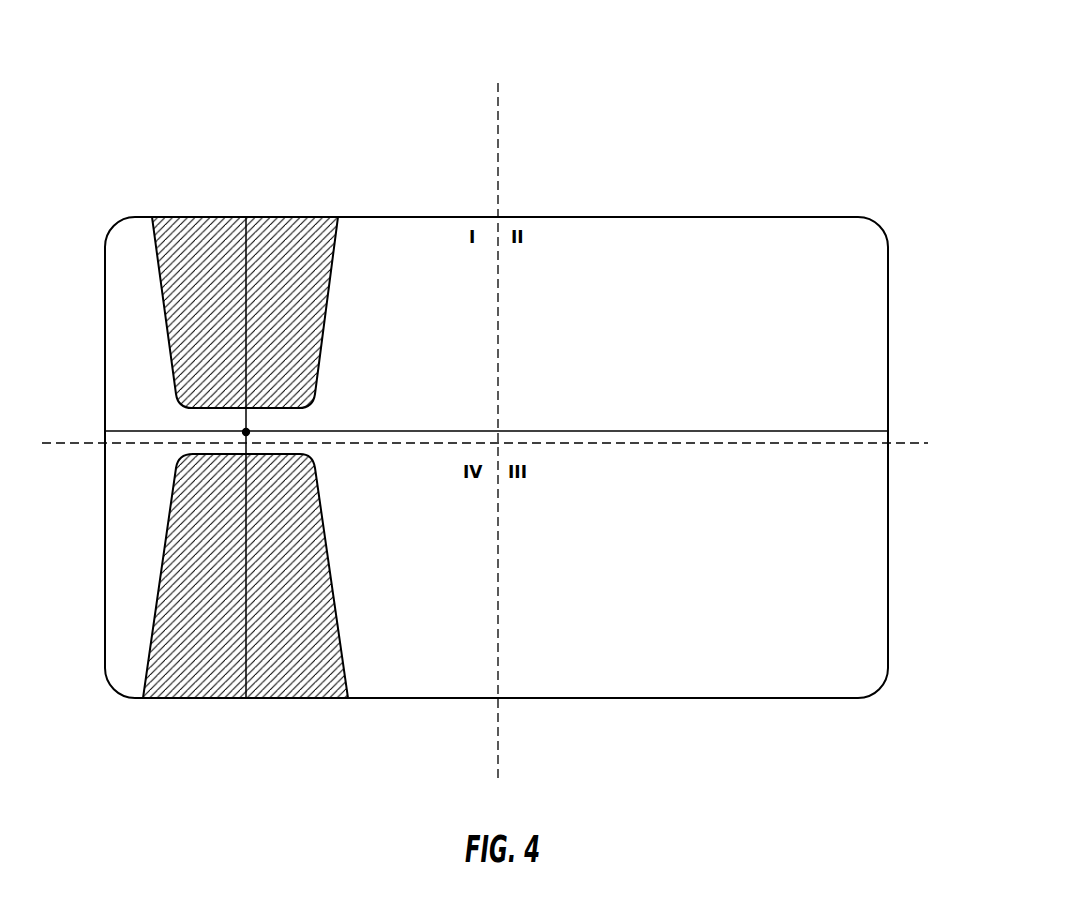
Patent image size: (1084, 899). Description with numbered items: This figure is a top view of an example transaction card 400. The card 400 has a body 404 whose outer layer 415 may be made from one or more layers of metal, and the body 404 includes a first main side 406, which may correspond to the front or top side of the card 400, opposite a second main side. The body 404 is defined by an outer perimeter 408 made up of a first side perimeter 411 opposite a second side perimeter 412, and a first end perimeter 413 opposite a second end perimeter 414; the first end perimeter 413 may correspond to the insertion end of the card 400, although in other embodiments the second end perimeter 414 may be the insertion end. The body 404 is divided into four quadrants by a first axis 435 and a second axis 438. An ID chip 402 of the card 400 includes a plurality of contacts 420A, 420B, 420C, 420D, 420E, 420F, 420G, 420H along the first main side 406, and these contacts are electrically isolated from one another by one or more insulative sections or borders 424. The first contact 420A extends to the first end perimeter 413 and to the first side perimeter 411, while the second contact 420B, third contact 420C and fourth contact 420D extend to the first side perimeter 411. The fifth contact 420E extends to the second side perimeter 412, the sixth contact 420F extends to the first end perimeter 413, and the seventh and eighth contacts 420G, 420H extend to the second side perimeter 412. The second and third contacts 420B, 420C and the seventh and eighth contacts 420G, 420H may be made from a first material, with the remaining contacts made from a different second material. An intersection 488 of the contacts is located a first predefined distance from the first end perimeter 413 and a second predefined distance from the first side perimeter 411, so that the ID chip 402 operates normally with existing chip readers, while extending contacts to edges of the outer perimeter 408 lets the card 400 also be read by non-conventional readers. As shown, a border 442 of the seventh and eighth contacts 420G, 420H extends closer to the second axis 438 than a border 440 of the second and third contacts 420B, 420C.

The transaction card 400 is at (720, 108).
The ID chip 402 is at (132, 387).
The body 404 is at (823, 215).
The first main side 406 is at (878, 277).
The outer perimeter 408 is at (798, 702).
The first side perimeter 411 is at (652, 216).
The second side perimeter 412 is at (668, 701).
The first end perimeter 413 is at (108, 564).
The second end perimeter 414 is at (889, 578).
The outer layer 415 is at (793, 596).
The first contact 420A is at (131, 322).
The second contact 420B is at (204, 237).
The third contact 420C is at (296, 237).
The fourth contact 420D is at (420, 232).
The fifth contact 420E is at (405, 682).
The sixth contact 420F is at (120, 487).
The seventh contact 420G is at (300, 685).
The eighth contact 420H is at (196, 685).
The insulative border 424 is at (820, 430).
The first axis 435 is at (498, 156).
The second axis 438 is at (905, 445).
The border of the second and third contacts 440 is at (328, 313).
The border of the seventh and eighth contacts 442 is at (324, 517).
The intersection 488 is at (246, 432).